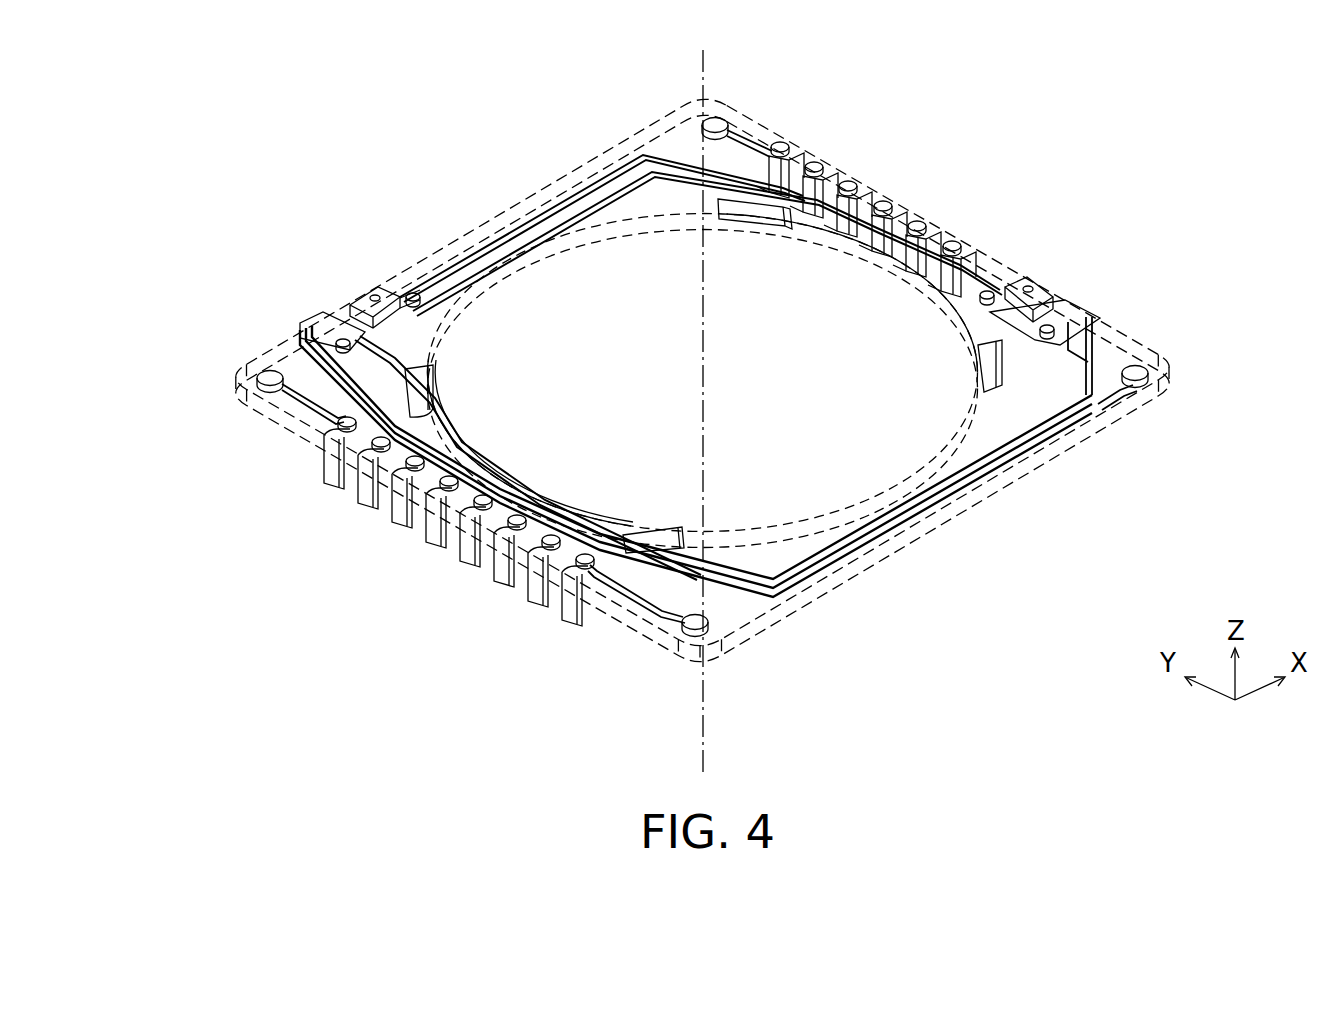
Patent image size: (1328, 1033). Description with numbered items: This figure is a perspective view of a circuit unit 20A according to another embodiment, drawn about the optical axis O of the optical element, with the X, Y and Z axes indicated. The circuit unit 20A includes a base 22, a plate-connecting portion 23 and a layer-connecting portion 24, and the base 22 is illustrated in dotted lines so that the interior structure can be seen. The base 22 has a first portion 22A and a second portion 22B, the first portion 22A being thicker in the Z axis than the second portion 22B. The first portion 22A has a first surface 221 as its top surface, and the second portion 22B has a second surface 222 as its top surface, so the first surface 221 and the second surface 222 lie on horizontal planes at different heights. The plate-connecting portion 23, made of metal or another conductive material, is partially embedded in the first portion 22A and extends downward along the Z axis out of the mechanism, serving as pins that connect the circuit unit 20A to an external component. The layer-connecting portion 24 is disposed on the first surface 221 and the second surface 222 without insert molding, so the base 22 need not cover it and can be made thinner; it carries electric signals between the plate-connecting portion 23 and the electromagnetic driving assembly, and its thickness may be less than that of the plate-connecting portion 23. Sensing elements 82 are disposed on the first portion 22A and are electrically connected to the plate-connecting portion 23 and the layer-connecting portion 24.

The circuit unit 20A is at (215, 58).
The optical axis O is at (706, 398).
The base 22 is at (755, 120).
The first portion 22A is at (315, 430).
The second portion 22B is at (262, 348).
The first surface 221 is at (372, 465).
The second surface 222 is at (240, 374).
The plate-connecting portion 23 is at (428, 531).
The layer-connecting portion 24 is at (994, 470).
The sensing elements 82 is at (362, 298).